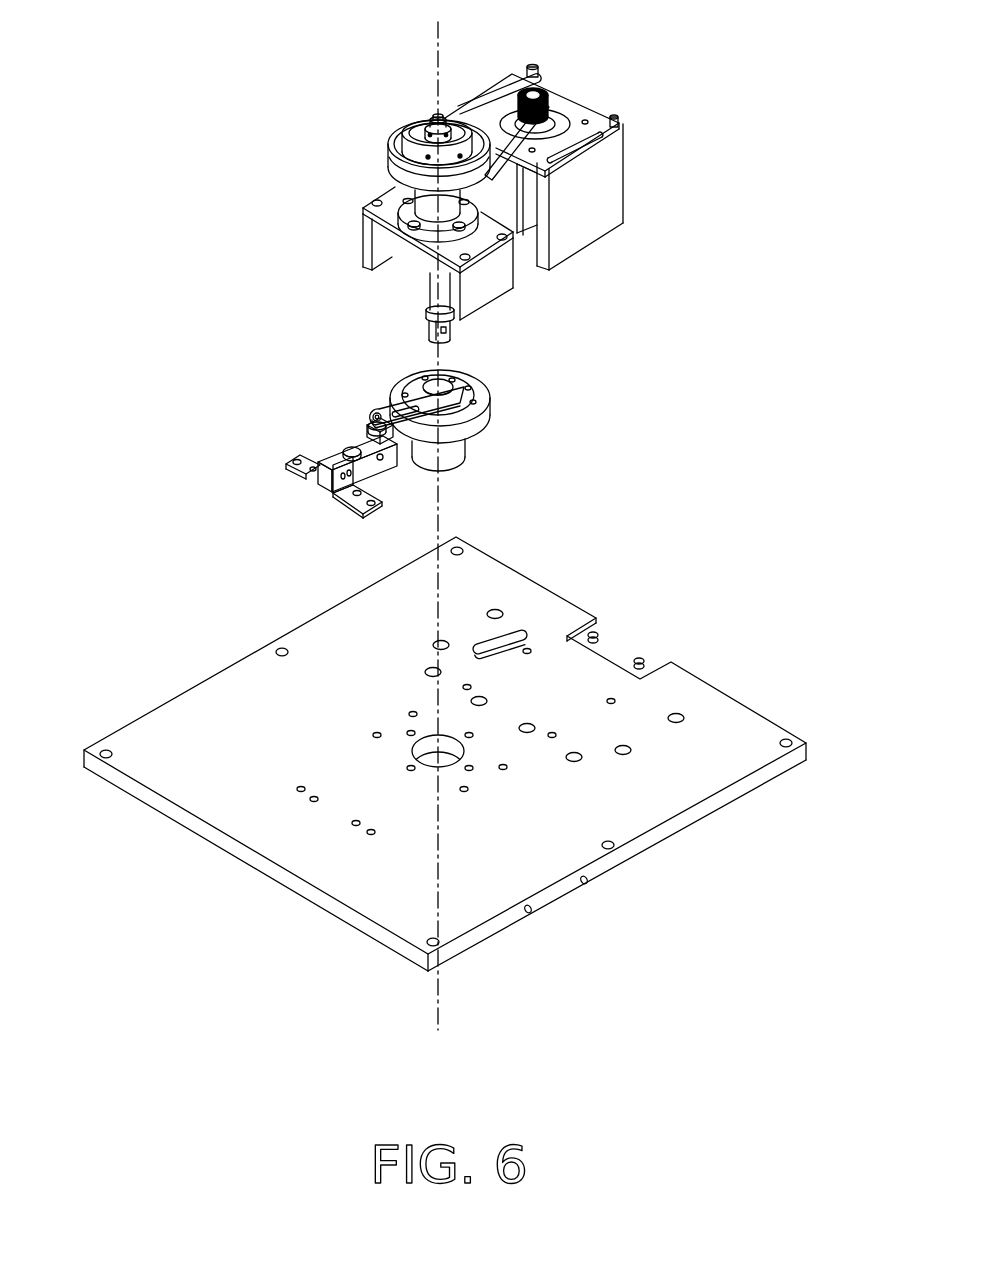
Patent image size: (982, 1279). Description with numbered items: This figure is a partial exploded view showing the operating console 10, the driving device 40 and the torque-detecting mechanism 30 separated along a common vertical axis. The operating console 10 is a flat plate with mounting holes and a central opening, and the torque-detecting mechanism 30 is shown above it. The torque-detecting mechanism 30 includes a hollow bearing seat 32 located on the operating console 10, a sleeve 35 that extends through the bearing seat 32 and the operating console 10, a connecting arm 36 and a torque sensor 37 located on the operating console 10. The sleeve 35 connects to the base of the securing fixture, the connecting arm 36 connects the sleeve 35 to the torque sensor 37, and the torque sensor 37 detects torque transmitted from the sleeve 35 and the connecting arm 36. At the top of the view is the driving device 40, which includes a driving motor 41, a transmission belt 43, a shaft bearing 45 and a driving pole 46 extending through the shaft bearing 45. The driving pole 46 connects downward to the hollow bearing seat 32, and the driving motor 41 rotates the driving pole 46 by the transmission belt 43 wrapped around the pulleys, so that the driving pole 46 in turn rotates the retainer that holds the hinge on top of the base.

The operating console 10 is at (723, 726).
The torque-detecting mechanism 30 is at (427, 430).
The hollow bearing seat 32 is at (478, 384).
The sleeve 35 is at (453, 458).
The connecting arm 36 is at (405, 388).
The torque sensor 37 is at (330, 458).
The driving device 40 is at (498, 183).
The driving motor 41 is at (502, 178).
The transmission belt 43 is at (487, 106).
The shaft bearing 45 is at (427, 203).
The driving pole 46 is at (433, 278).